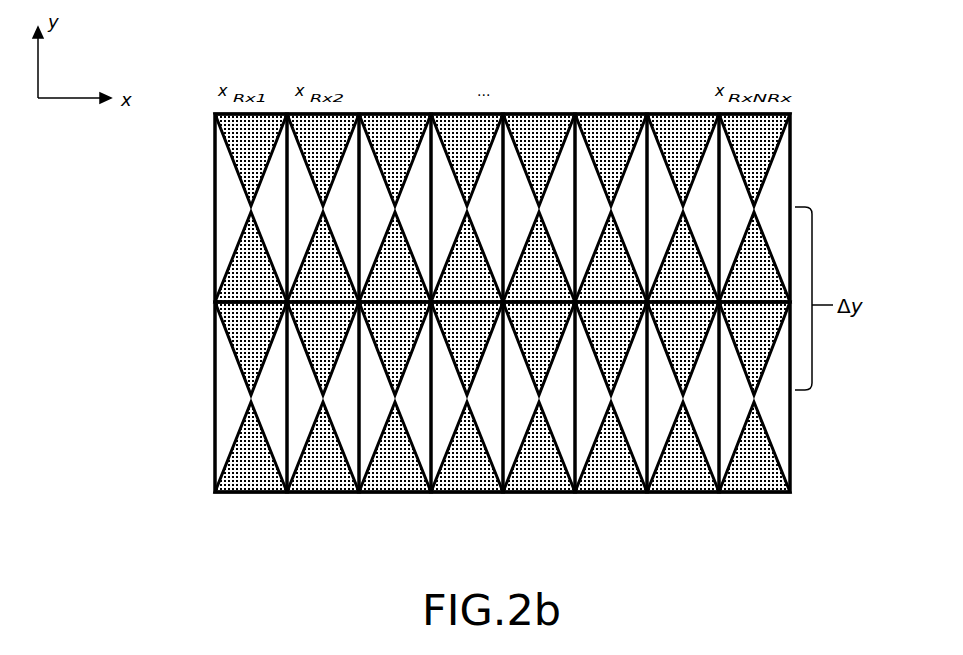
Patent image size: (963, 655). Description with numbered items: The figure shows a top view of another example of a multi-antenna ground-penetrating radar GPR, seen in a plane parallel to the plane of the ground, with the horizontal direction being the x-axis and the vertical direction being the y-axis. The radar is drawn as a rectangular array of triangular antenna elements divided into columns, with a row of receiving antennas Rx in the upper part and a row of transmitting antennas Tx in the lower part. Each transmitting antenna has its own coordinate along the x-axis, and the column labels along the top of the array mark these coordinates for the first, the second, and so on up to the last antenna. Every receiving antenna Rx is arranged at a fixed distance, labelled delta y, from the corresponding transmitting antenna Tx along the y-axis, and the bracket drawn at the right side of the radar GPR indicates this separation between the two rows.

The ground-penetrating radar GPR is at (803, 153).
The receiving antennas Rx is at (165, 197).
The transmitting antennas Tx is at (162, 397).